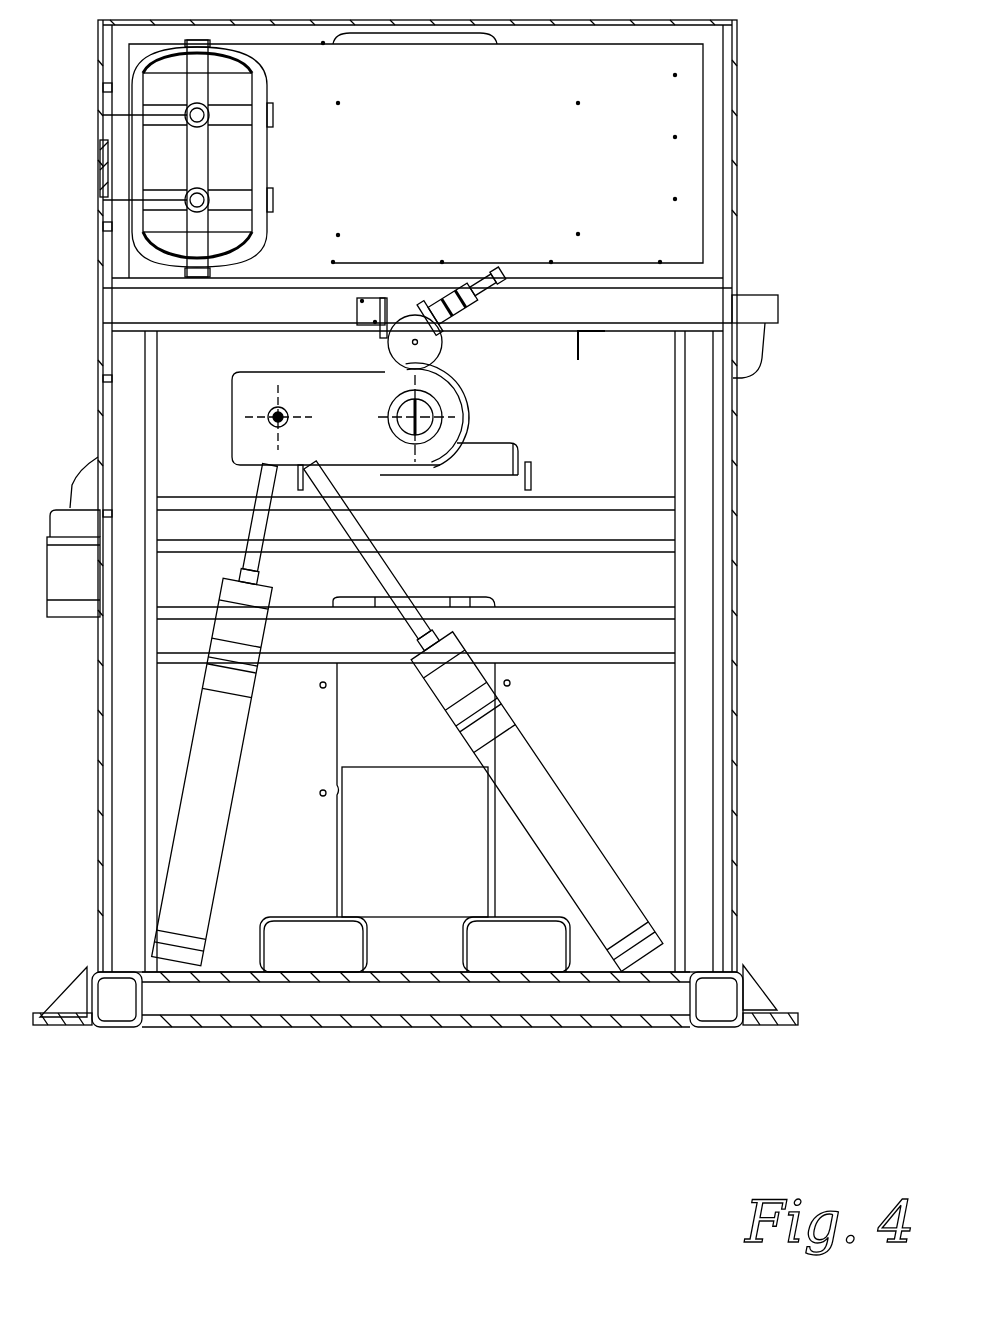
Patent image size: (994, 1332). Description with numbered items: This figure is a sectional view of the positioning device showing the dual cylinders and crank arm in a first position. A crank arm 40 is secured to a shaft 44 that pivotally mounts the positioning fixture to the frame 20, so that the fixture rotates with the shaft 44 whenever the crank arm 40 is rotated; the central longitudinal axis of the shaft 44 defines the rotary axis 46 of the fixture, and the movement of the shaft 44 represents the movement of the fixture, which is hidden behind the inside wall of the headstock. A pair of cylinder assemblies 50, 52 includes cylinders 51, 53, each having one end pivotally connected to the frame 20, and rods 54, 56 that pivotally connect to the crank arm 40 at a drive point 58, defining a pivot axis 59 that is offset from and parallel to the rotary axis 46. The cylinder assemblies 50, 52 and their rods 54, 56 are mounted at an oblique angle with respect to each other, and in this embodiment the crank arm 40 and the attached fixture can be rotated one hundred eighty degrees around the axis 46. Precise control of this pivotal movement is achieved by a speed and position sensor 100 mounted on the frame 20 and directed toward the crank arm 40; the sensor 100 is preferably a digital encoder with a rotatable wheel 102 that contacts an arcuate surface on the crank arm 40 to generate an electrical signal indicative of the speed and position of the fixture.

The frame 20 is at (768, 933).
The crank arm 40 is at (252, 402).
The shaft 44 is at (425, 410).
The rotary axis 46 is at (445, 430).
The cylinder assembly 50 is at (169, 713).
The cylinder 51 is at (188, 703).
The cylinder assembly 52 is at (476, 711).
The cylinder 53 is at (547, 733).
The rod 54 is at (260, 518).
The rod 56 is at (367, 550).
The drive point 58 is at (270, 419).
The pivot axis 59 is at (276, 407).
The speed and position sensor 100 is at (412, 278).
The rotatable wheel 102 is at (440, 350).